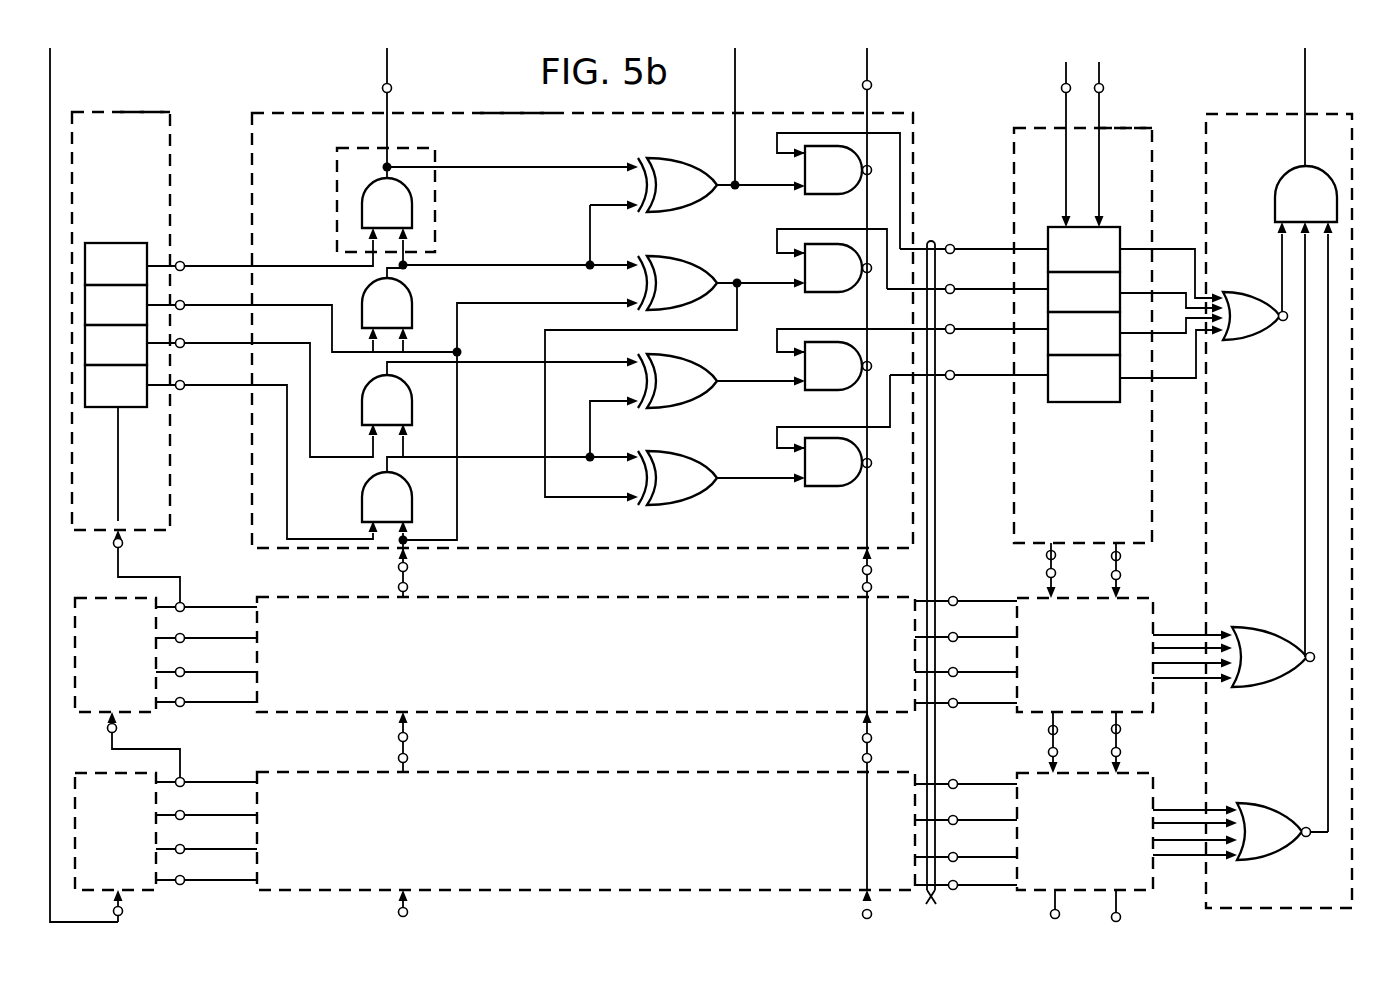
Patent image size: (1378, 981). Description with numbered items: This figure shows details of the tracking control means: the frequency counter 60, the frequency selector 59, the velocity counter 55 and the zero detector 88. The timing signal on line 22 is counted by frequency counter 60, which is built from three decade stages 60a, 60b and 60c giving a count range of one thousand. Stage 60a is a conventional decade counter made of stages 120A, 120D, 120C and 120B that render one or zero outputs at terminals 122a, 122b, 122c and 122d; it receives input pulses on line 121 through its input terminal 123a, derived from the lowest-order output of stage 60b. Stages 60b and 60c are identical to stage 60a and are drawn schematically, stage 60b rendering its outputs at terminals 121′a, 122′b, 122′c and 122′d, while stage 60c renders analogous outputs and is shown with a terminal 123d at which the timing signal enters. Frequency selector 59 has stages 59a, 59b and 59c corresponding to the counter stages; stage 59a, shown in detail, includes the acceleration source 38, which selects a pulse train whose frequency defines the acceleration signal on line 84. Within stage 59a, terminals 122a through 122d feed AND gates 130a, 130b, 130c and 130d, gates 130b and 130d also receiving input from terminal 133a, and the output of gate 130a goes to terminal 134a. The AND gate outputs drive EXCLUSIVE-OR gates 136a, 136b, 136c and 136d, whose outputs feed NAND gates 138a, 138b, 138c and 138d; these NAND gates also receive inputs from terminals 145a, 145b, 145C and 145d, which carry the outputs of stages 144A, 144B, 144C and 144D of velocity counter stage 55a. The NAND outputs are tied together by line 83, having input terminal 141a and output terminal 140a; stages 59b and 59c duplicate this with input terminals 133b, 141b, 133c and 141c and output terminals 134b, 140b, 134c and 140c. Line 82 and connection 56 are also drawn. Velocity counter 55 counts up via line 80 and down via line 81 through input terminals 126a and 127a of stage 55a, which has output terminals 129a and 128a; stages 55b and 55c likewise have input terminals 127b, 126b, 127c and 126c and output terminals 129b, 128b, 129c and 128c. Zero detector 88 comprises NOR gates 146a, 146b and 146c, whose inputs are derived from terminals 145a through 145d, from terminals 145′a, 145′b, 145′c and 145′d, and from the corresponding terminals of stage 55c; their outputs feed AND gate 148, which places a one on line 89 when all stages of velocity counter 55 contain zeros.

The line 22 is at (50, 68).
The frequency counter 60 is at (116, 110).
The decade stage 60a is at (146, 112).
The stage 120A is at (116, 264).
The stage 120D is at (116, 305).
The stage 120C is at (116, 345).
The stage 120B is at (116, 386).
The output terminal 122a is at (181, 261).
The output terminal 122b is at (181, 300).
The output terminal 122c is at (181, 339).
The output terminal 122d is at (181, 381).
The line 121 is at (118, 470).
The input terminal 123a is at (123, 543).
The decade stage 60b is at (127, 688).
The decade stage 60c is at (115, 831).
The line 121′a is at (181, 602).
The output terminal 122′b is at (181, 633).
The output terminal 122′c is at (181, 667).
The output terminal 122′d is at (181, 698).
The terminal 123d is at (123, 911).
The frequency selector 59 is at (270, 104).
The frequency selector stage 59a is at (508, 112).
The acceleration source 38 is at (410, 148).
The line 84 is at (511, 113).
The output terminal 134a is at (382, 88).
The AND gate 130a is at (362, 206).
The AND gate 130b is at (412, 296).
The AND gate 130c is at (362, 392).
The AND gate 130d is at (362, 492).
The output terminal 134b is at (408, 587).
The input terminal 133a is at (408, 567).
The line 82 is at (735, 62).
The EXCLUSIVE-OR gate 136a is at (660, 158).
The EXCLUSIVE-OR gate 136b is at (668, 256).
The EXCLUSIVE-OR gate 136c is at (690, 408).
The EXCLUSIVE-OR gate 136d is at (690, 505).
The NAND gate 138a is at (834, 194).
The NAND gate 138b is at (840, 292).
The NAND gate 138c is at (834, 390).
The NAND gate 138d is at (834, 487).
The line 83 is at (867, 78).
The output terminal 140a is at (862, 86).
The input terminal 141a is at (862, 570).
The output terminal 140b is at (862, 587).
The input terminal 141b is at (862, 738).
The output terminal 140c is at (862, 758).
The input terminal 141c is at (872, 914).
The terminal 145a is at (950, 244).
The terminal 145b is at (950, 284).
The terminal 145C is at (950, 324).
The terminal 145d is at (950, 370).
The cable 56 is at (940, 900).
The line 81 is at (1064, 66).
The input terminal 127a is at (1061, 90).
The line 80 is at (1101, 70).
The input terminal 126a is at (1104, 88).
The velocity counter 55 is at (1006, 120).
The velocity counter stage 55a is at (1120, 128).
The stage 144A is at (1135, 265).
The stage 144B is at (1135, 292).
The stage 144C is at (1135, 333).
The stage 144D is at (1135, 364).
The zero detector 88 is at (1254, 112).
The line 89 is at (1305, 82).
The AND gate 148 is at (1256, 186).
The NOR gate 146a is at (1262, 266).
The NOR gate 146b is at (1284, 604).
The NOR gate 146c is at (1290, 780).
The velocity counter stage 55b is at (1124, 655).
The velocity counter stage 55c is at (1127, 831).
The terminal 145′a is at (952, 597).
The terminal 145′b is at (952, 633).
The terminal 145′c is at (952, 668).
The terminal 145′d is at (952, 699).
The output terminal 129a is at (1046, 555).
The input terminal 127b is at (1056, 573).
The output terminal 128a is at (1121, 554).
The input terminal 126b is at (1121, 575).
The output terminal 129b is at (1048, 730).
The input terminal 127c is at (1058, 752).
The output terminal 128b is at (1121, 728).
The input terminal 126c is at (1121, 752).
The output terminal 129c is at (1050, 914).
The output terminal 128c is at (1121, 917).
The frequency selector stage 59b is at (586, 654).
The frequency selector stage 59c is at (586, 831).
The output terminal 134c is at (408, 758).
The input terminal 133b is at (408, 737).
The input terminal 133c is at (408, 912).